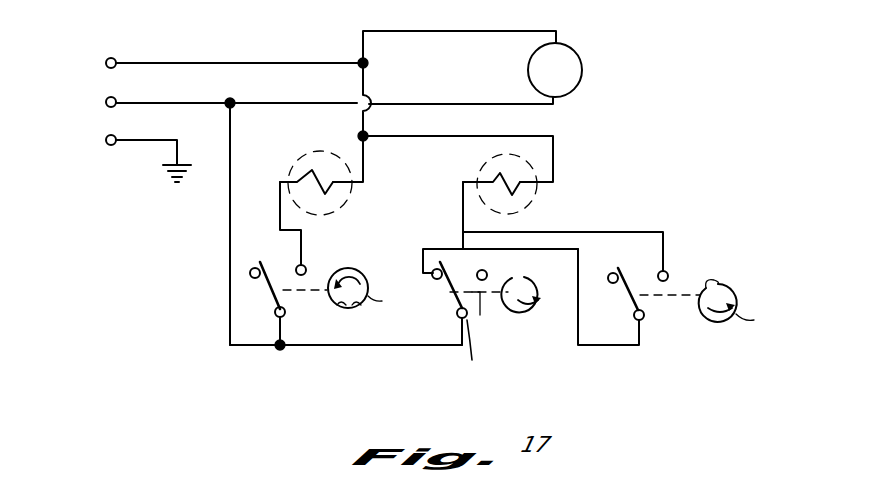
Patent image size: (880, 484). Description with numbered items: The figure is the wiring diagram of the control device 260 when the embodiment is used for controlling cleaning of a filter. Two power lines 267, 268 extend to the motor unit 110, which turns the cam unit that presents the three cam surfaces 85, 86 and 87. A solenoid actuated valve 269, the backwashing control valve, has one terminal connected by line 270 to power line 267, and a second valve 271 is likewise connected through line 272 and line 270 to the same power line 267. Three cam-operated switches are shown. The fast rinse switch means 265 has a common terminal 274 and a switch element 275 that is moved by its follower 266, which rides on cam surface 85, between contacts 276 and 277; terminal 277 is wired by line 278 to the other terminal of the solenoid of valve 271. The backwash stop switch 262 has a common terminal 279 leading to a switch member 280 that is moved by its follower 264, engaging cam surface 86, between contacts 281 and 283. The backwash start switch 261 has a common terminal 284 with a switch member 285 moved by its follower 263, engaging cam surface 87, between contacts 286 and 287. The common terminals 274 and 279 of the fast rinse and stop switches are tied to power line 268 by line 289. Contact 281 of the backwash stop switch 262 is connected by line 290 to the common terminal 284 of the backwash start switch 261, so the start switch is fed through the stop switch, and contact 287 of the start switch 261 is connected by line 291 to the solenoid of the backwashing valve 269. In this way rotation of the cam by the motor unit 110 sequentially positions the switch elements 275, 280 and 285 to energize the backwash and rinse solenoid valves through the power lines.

The motor unit 110 is at (583, 72).
The control device 260 is at (658, 135).
The backwash start switch 261 is at (660, 310).
The backwash stop switch 262 is at (500, 346).
The follower 263 is at (677, 293).
The follower 264 is at (498, 331).
The fast rinse switch means 265 is at (296, 309).
The follower 266 is at (313, 287).
The power line 267 is at (293, 44).
The power line 268 is at (303, 88).
The solenoid actuated valve 269 is at (486, 161).
The line 270 is at (557, 153).
The second valve 271 is at (343, 195).
The line 272 is at (367, 160).
The common terminal 274 is at (273, 315).
The switch element 275 is at (267, 285).
The contact 276 is at (253, 270).
The contact 277 is at (303, 266).
The line 278 is at (280, 202).
The common terminal 279 is at (481, 354).
The switch member 280 is at (450, 287).
The contact 281 is at (430, 278).
The contact 283 is at (491, 263).
The common terminal 284 is at (641, 320).
The switch member 285 is at (635, 303).
The contact 286 is at (610, 273).
The contact 287 is at (667, 272).
The line 289 is at (227, 235).
The line 290 is at (587, 348).
The line 291 is at (637, 231).
The cam surface 85 is at (389, 308).
The cam surface 86 is at (512, 278).
The cam surface 87 is at (711, 311).